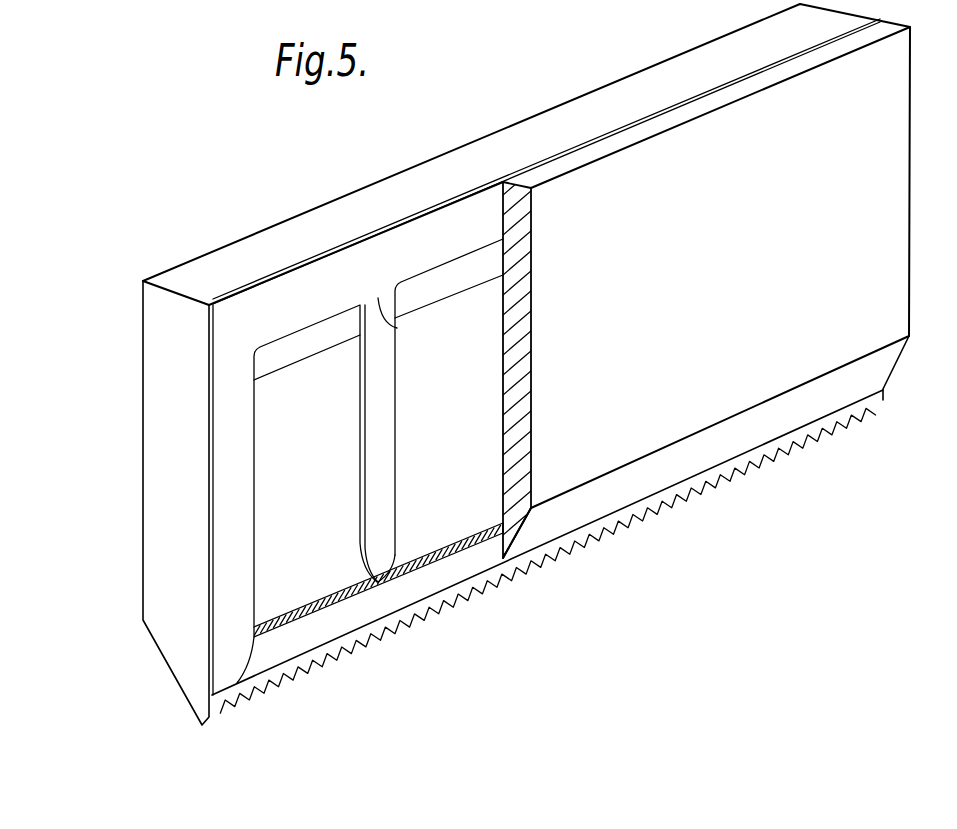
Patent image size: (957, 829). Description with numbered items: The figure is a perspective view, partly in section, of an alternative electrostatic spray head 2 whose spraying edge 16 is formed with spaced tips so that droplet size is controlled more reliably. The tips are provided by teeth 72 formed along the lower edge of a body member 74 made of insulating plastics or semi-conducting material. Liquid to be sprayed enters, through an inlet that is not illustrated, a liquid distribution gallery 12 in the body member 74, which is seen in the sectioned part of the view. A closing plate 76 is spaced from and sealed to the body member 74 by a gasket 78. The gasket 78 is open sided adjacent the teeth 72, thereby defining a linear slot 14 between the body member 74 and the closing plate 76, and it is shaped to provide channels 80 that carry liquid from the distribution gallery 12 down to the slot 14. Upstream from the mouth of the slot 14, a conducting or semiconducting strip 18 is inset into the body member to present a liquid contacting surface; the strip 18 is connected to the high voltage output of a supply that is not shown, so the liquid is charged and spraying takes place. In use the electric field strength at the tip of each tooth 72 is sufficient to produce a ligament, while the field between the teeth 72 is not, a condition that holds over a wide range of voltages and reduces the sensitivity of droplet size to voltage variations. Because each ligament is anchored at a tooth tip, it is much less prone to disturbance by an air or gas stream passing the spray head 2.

The electrostatic spray head 2 is at (175, 647).
The liquid distribution gallery 12 is at (483, 260).
The linear slot 14 is at (517, 557).
The spraying edge 16 is at (443, 622).
The conducting or semiconducting strip 18 is at (452, 553).
The teeth 72 is at (348, 650).
The body member 74 is at (165, 495).
The closing plate 76 is at (883, 200).
The gasket 78 is at (397, 328).
The channels 80 is at (327, 486).